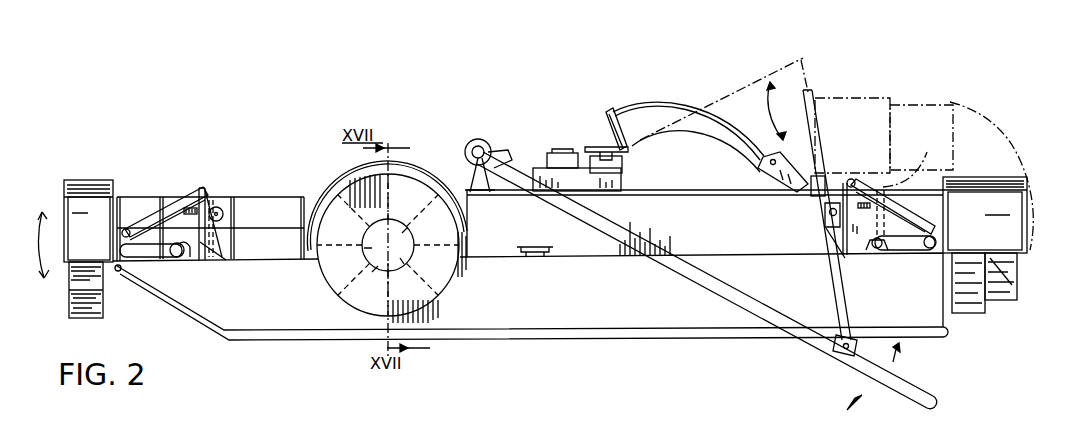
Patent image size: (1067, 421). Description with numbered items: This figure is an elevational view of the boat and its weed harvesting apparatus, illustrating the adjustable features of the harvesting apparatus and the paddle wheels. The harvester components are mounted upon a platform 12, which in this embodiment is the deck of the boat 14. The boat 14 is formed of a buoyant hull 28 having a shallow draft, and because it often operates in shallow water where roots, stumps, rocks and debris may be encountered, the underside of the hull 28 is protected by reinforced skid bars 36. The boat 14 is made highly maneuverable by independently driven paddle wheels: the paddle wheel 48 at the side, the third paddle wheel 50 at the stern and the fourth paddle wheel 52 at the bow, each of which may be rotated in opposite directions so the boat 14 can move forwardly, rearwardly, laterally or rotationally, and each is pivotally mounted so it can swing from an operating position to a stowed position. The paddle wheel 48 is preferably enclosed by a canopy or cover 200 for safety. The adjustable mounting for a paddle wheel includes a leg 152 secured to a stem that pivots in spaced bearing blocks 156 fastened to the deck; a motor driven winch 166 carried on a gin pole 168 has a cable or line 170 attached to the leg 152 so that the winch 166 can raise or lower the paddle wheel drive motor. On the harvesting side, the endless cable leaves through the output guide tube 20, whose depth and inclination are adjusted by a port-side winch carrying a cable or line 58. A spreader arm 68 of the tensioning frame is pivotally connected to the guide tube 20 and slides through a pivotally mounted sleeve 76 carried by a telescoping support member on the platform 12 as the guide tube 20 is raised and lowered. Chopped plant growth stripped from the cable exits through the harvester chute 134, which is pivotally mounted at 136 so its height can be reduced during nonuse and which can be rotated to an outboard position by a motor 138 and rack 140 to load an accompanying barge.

The platform 12 is at (690, 191).
The boat 14 is at (202, 339).
The output guide tube 20 is at (655, 256).
The buoyant hull 28 is at (586, 306).
The reinforced skid bars 36 is at (222, 332).
The paddle wheel 48 is at (452, 278).
The third paddle wheel 50 is at (928, 110).
The fourth paddle wheel 52 is at (104, 312).
The cable or line 58 is at (916, 390).
The spreader arm 68 is at (820, 158).
The pivotally mounted sleeve 76 is at (812, 196).
The harvester chute 134 is at (660, 108).
The pivot mounting of harvester chute 136 is at (628, 148).
The motor 138 is at (565, 152).
The rack 140 is at (622, 170).
The leg 152 is at (927, 160).
The bearing blocks 156 is at (183, 256).
The motor driven winch 166 is at (224, 214).
The gin pole 168 is at (207, 242).
The cable or line 170 is at (207, 195).
The canopy or cover 200 is at (396, 168).